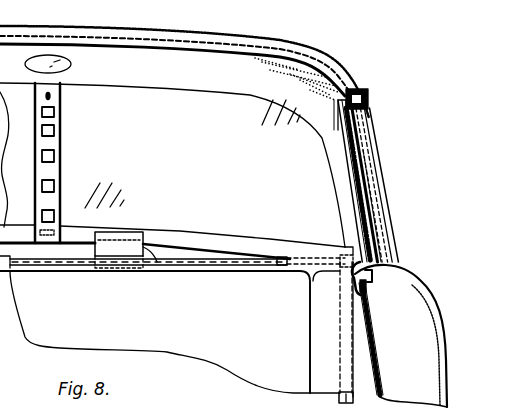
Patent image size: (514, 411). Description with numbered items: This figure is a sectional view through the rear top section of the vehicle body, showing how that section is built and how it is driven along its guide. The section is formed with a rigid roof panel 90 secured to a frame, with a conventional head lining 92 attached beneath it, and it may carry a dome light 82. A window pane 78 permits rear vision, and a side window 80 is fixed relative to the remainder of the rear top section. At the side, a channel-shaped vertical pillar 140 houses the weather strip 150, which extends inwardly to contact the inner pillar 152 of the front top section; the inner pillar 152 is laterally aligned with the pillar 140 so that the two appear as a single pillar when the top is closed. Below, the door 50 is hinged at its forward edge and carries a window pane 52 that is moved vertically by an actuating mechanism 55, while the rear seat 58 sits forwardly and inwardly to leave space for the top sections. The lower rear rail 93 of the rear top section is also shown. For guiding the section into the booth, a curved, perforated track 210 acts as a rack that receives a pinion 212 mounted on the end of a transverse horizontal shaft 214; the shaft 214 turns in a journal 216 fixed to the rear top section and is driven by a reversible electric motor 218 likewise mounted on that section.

The roof panel 90 is at (100, 27).
The head lining 92 is at (168, 47).
The dome light 82 is at (71, 66).
The window pane 78 is at (172, 165).
The vertical pillar 140 is at (373, 125).
The window pane 52 is at (357, 165).
The weather strip 150 is at (369, 187).
The side window 80 is at (384, 213).
The inner pillar 152 is at (365, 242).
The actuating mechanism 55 is at (376, 285).
The door 50 is at (447, 384).
The rear seat 58 is at (170, 332).
The curved track 210 is at (339, 400).
The pinion 212 is at (344, 256).
The transverse horizontal shaft 214 is at (63, 266).
The journal 216 is at (281, 257).
The reversible electric motor 218 is at (112, 250).
The lower rear rail 93 is at (197, 232).